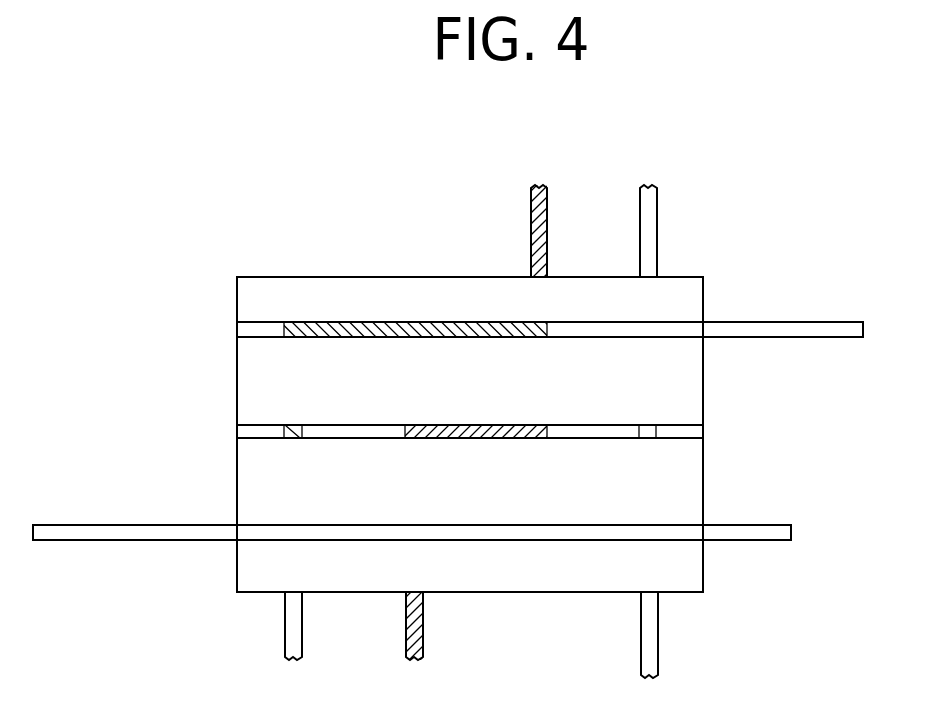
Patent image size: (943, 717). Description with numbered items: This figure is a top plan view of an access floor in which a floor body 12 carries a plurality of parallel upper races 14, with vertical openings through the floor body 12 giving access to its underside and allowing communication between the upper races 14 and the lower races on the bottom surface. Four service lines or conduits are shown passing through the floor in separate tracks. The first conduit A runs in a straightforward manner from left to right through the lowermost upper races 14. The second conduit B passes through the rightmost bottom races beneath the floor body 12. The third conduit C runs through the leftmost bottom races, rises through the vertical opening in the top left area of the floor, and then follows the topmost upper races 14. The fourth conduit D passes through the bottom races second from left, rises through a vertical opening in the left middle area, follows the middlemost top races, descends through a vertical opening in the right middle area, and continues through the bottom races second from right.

The floor body 12 is at (266, 302).
The upper races 14 is at (223, 328).
The first conduit A is at (108, 536).
The second conduit B is at (648, 216).
The third conduit C is at (818, 321).
The fourth conduit D is at (551, 203).